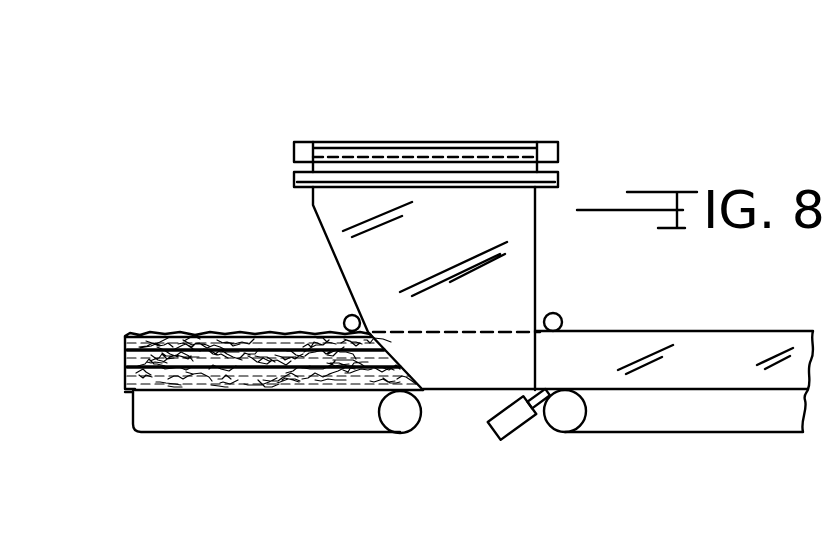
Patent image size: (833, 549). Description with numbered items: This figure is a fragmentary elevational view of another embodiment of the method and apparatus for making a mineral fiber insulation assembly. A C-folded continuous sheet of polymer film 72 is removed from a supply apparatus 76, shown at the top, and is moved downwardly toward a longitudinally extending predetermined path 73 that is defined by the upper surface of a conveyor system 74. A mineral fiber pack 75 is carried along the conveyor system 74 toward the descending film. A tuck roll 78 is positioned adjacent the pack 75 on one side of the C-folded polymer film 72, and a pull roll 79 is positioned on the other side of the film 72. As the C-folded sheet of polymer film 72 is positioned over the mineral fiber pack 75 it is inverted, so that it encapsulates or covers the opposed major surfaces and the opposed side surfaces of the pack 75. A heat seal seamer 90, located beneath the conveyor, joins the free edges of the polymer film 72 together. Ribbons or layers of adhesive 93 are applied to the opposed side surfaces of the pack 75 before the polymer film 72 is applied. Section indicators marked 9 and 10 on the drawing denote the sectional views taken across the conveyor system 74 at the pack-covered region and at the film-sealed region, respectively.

The C-folded continuous sheet of polymer film 72 is at (537, 213).
The longitudinally extending predetermined path 73 is at (597, 388).
The conveyor system 74 is at (183, 331).
The mineral fiber pack 75 is at (243, 331).
The supply apparatus 76 is at (550, 141).
The tuck roll 78 is at (346, 317).
The pull roll 79 is at (553, 313).
The heat seal seamer 90 is at (520, 440).
The ribbons or layers of adhesive 93 is at (130, 407).
The section line 9 is at (232, 95).
The section arrow 10 is at (330, 457).